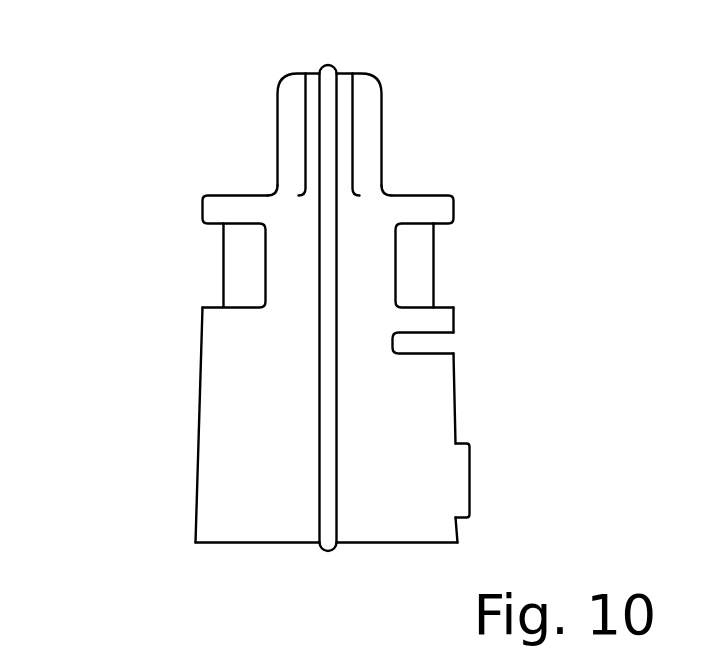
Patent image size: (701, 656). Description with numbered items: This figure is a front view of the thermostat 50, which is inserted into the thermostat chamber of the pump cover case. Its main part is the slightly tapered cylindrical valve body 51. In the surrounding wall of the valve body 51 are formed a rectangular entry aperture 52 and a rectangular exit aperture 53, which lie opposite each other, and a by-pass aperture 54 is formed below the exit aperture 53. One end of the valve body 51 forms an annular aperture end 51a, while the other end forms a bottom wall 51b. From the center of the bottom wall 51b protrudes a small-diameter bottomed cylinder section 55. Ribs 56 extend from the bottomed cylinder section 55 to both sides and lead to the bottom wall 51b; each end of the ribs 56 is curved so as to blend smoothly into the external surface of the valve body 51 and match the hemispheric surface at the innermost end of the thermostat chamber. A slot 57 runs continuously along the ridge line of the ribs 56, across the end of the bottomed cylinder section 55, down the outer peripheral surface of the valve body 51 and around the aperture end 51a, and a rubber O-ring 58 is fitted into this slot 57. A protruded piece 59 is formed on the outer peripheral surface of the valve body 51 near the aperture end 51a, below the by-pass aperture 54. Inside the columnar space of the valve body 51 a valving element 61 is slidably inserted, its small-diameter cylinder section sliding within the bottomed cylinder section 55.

The thermostat 50 is at (195, 93).
The valve body 51 is at (198, 415).
The aperture end 51a is at (287, 545).
The bottom wall 51b is at (422, 193).
The entry aperture 52 is at (208, 258).
The exit aperture 53 is at (447, 260).
The by-pass aperture 54 is at (448, 338).
The bottomed cylinder section 55 is at (382, 115).
The ribs 56 is at (307, 145).
The slot 57 is at (336, 545).
The O-ring 58 is at (318, 428).
The protruded piece 59 is at (470, 480).
The valving element 61 is at (435, 242).